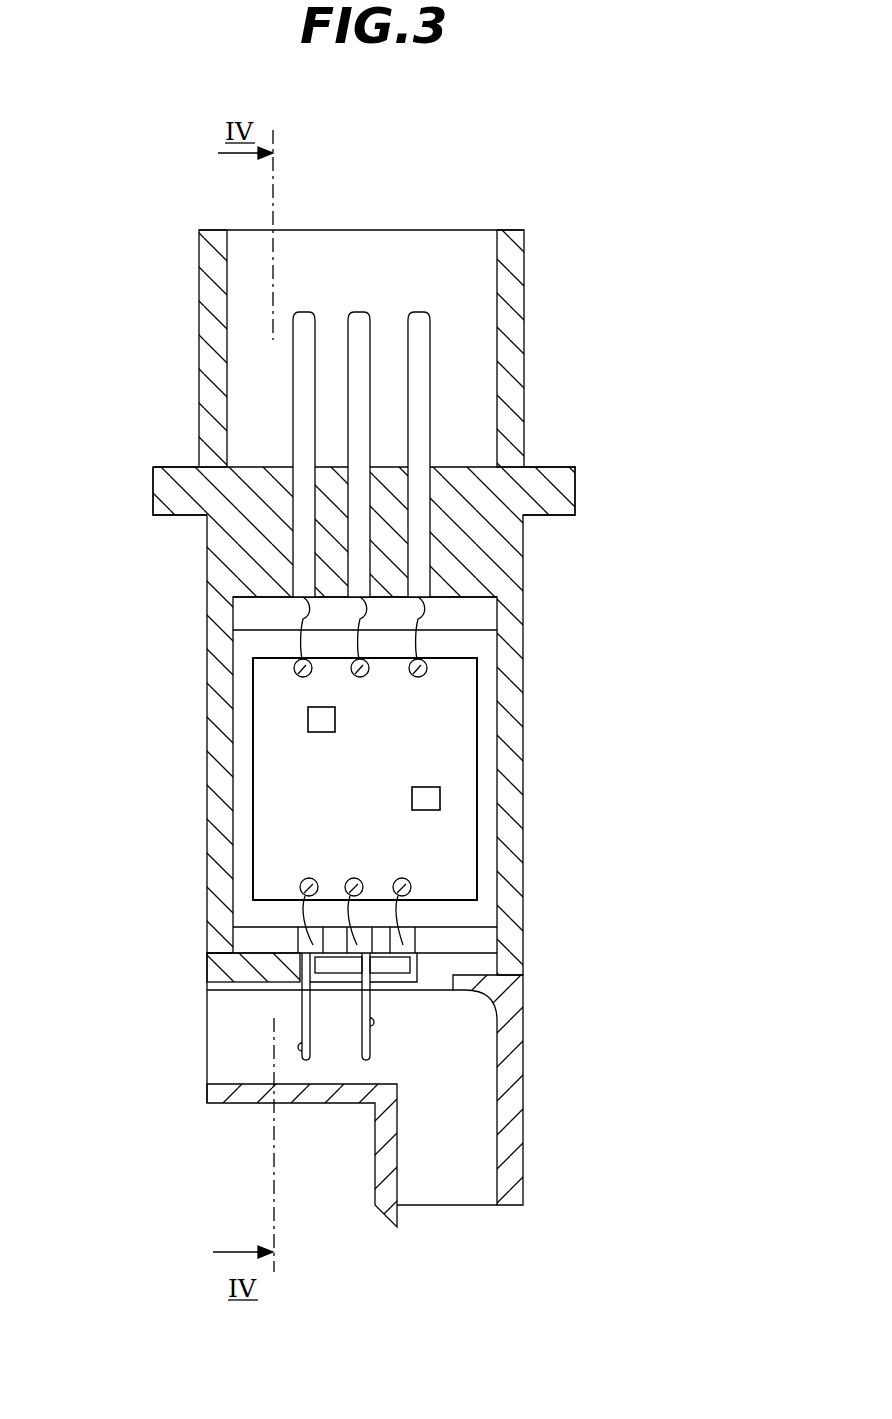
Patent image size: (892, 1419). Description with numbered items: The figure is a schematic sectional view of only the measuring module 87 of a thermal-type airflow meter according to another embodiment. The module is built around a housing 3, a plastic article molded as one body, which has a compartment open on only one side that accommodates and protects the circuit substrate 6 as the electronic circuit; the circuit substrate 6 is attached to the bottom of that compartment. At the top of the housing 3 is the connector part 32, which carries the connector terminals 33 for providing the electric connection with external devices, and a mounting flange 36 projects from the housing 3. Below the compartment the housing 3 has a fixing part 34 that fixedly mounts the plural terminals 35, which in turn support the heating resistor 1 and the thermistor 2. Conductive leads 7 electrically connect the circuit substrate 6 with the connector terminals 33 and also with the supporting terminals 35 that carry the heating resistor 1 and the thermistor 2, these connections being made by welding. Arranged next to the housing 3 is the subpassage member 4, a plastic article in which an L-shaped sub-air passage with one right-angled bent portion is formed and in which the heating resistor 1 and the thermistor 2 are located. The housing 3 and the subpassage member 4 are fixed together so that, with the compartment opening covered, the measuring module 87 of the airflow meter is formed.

The heating resistor 1 is at (300, 1047).
The thermistor 2 is at (375, 1023).
The housing 3 is at (207, 785).
The subpassage member 4 is at (512, 1138).
The circuit substrate 6 is at (420, 755).
The conductive leads 7 is at (287, 637).
The connector part 32 is at (511, 333).
The connector terminals 33 is at (421, 313).
The fixing part 34 is at (266, 939).
The terminals 35 is at (289, 1014).
The mounting flange 36 is at (562, 470).
The measuring module 87 is at (350, 229).